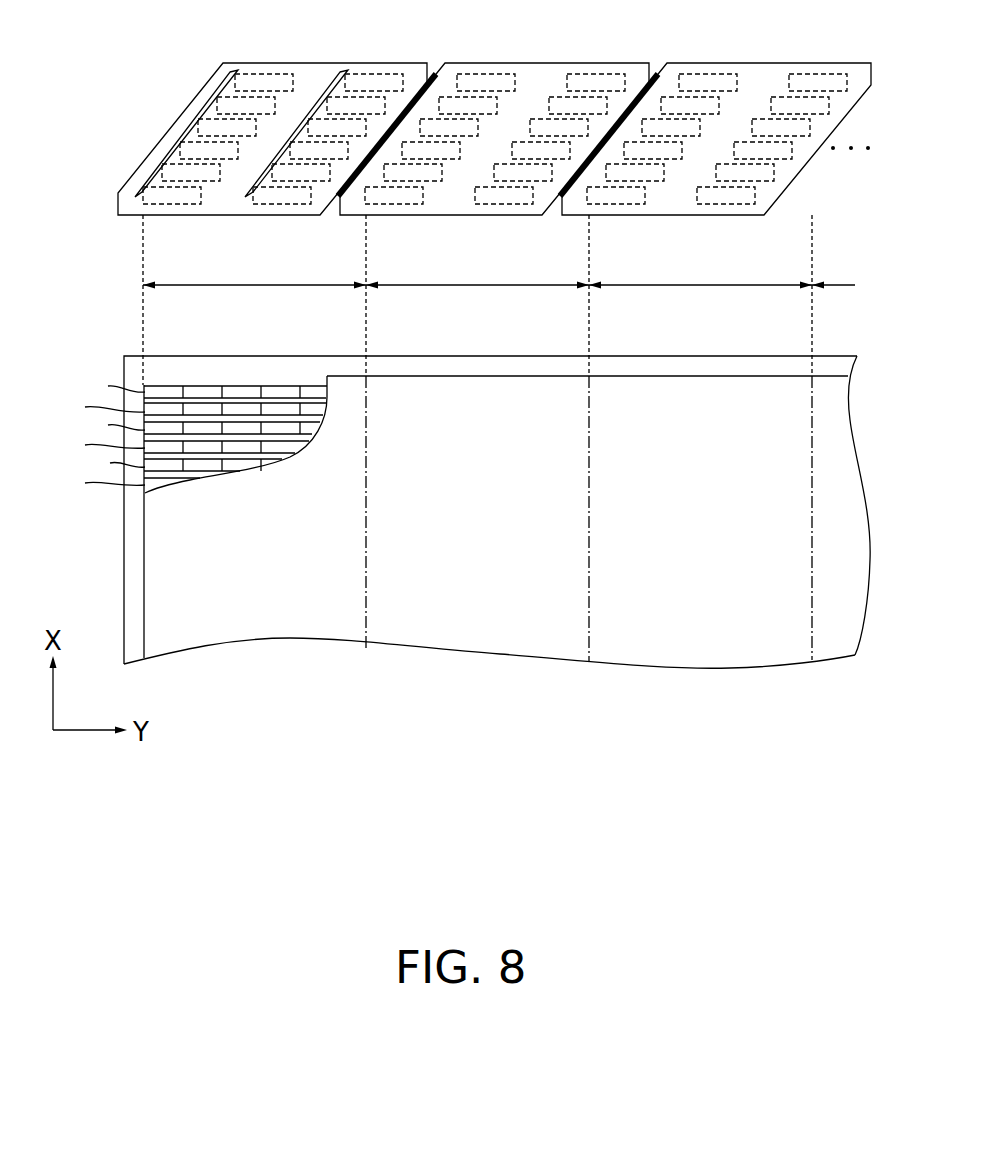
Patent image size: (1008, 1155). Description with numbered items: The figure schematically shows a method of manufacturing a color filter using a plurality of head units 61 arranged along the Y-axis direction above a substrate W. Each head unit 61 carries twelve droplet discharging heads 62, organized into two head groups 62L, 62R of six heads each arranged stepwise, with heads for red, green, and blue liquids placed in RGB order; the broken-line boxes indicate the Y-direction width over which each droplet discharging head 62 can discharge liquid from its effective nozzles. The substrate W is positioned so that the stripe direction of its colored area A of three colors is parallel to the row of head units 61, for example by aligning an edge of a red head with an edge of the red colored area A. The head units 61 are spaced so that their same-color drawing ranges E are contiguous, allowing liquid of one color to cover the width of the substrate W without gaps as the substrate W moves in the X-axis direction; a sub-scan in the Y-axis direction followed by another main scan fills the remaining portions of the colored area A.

The head unit 61 is at (405, 62).
The droplet discharging head 62 is at (253, 72).
The head group 62L is at (186, 127).
The head group 62R is at (307, 107).
The colored area A is at (202, 394).
The substrate W is at (310, 368).
The drawing range E is at (499, 272).